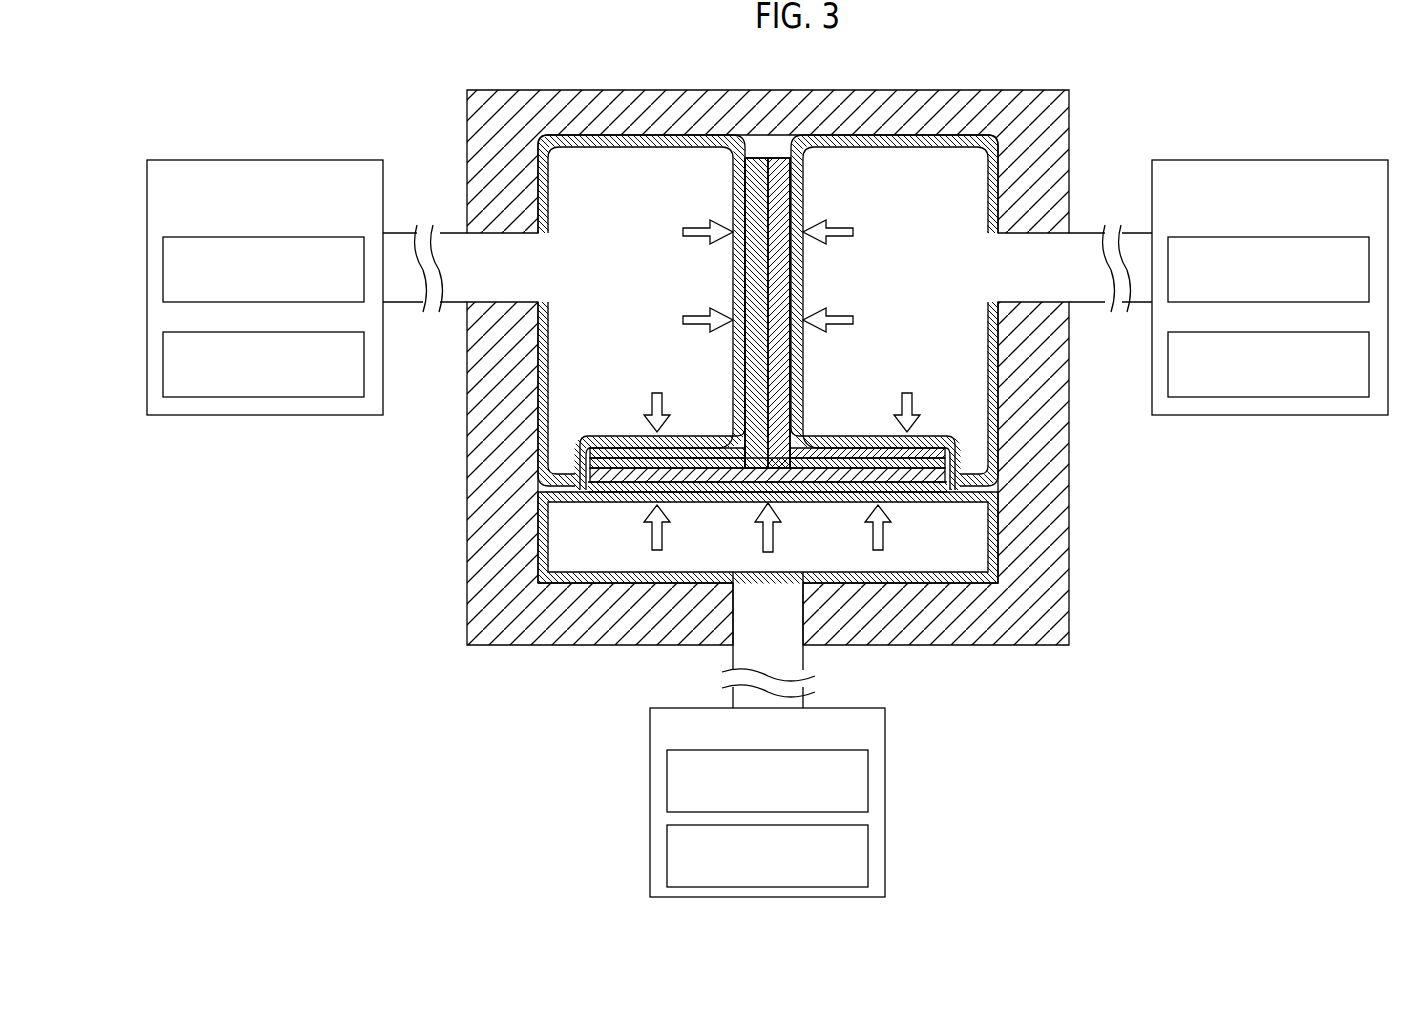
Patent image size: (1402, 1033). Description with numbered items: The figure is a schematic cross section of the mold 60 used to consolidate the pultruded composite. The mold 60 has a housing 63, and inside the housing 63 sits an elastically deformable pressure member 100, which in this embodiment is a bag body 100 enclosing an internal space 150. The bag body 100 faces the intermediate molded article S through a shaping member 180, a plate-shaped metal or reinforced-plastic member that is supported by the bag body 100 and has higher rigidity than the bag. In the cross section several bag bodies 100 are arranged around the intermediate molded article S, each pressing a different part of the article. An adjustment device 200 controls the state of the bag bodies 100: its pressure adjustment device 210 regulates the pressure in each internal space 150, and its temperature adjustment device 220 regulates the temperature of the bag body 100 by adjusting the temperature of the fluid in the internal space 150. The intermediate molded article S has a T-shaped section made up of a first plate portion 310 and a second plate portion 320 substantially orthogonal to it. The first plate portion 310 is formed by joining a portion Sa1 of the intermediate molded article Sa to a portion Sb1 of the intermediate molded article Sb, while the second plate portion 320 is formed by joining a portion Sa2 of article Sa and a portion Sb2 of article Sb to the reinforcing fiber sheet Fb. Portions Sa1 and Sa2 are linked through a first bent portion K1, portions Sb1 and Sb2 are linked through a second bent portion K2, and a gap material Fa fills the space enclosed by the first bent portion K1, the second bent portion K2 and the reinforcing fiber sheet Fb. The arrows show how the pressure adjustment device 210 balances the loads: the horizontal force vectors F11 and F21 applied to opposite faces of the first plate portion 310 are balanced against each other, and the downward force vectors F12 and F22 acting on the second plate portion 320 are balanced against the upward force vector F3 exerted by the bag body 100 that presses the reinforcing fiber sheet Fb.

The mold 60 is at (1018, 91).
The housing 63 is at (1060, 149).
The pressure member (bag body) 100 is at (598, 134).
The internal space 150 is at (611, 276).
The shaping member 180 is at (740, 258).
The adjustment device 200 is at (326, 160).
The pressure adjustment device 210 is at (316, 237).
The temperature adjustment device 220 is at (316, 332).
The first plate portion 310 is at (775, 253).
The second plate portion 320 is at (768, 432).
The intermediate molded article S is at (768, 258).
The intermediate molded article Sa is at (828, 253).
The intermediate molded article Sb is at (715, 253).
The portion Sa1 is at (787, 288).
The portion Sa2 is at (890, 450).
The portion Sb1 is at (748, 288).
The portion Sb2 is at (600, 446).
The first bent portion K1 is at (806, 432).
The second bent portion K2 is at (731, 432).
The force vector F11 is at (851, 275).
The force vector F12 is at (906, 393).
The force vector F21 is at (685, 275).
The force vector F22 is at (658, 393).
The force vector F3 is at (767, 545).
The gap material Fa is at (790, 494).
The reinforcing fiber sheet Fb is at (720, 494).